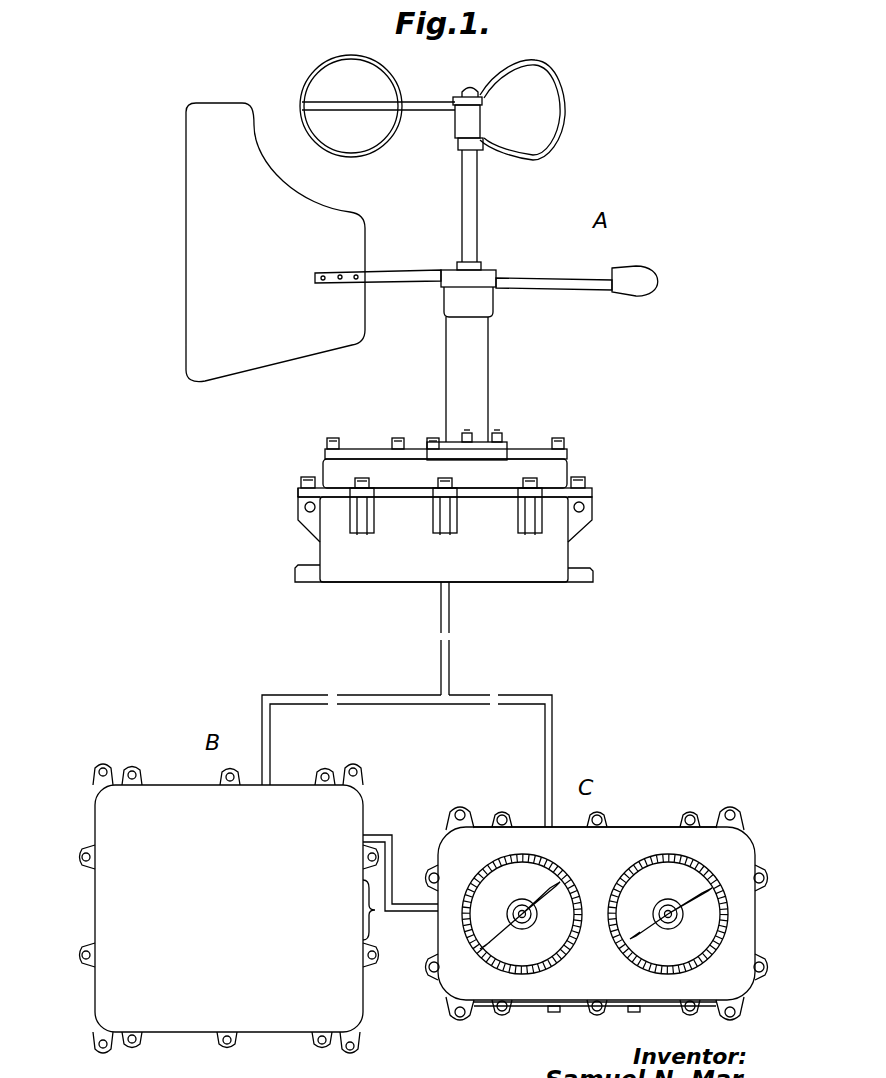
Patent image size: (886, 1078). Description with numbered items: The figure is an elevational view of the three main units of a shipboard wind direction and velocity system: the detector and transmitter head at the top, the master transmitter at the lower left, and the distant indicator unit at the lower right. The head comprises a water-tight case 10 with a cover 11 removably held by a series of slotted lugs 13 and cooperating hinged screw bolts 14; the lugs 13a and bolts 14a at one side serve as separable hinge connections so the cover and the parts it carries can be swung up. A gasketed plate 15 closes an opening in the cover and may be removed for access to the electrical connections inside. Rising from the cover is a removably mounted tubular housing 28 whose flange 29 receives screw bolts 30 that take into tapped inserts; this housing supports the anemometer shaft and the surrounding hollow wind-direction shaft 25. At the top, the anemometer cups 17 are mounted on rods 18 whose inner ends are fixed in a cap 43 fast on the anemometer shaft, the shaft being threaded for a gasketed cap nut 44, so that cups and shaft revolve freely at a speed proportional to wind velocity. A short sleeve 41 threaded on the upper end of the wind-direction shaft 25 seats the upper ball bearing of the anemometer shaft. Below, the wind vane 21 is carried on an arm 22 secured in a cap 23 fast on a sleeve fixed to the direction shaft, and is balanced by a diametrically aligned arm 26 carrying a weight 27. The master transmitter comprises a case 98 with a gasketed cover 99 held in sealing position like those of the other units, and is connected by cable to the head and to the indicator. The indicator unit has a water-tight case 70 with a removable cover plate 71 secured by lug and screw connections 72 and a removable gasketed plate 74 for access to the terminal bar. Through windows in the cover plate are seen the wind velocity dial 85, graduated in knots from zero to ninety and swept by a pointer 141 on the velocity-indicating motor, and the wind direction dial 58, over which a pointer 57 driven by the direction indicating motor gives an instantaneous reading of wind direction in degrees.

The water-tight case 10 is at (562, 545).
The cover 11 is at (560, 472).
The slotted lugs 13 is at (592, 493).
The lugs 13a is at (297, 492).
The hinged screw bolts 14 is at (584, 488).
The bolts 14a is at (305, 478).
The gasketed plate 15 is at (532, 448).
The anemometer cups 17 is at (313, 82).
The rods 18 is at (433, 107).
The wind vane 21 is at (330, 210).
The arm 22 is at (409, 276).
The cap 23 is at (485, 299).
The wind-direction shaft 25 is at (473, 231).
The counterweight arm 26 is at (567, 277).
The weight 27 is at (640, 274).
The tubular housing 28 is at (487, 374).
The flange 29 is at (430, 443).
The screw bolts 30 is at (468, 435).
The short sleeve 41 is at (478, 146).
The cap 43 is at (460, 125).
The gasketed cap nut 44 is at (468, 90).
The pointer 57 is at (717, 915).
The dial 58 is at (713, 923).
The water-tight case 70 is at (678, 824).
The cover plate 71 is at (733, 860).
The lug and screw connections 72 is at (503, 823).
The gasketed plate 74 is at (530, 1007).
The wind velocity dial 85 is at (490, 908).
The case 98 is at (237, 908).
The gasketed cover 99 is at (343, 808).
The pointer 141 is at (493, 926).